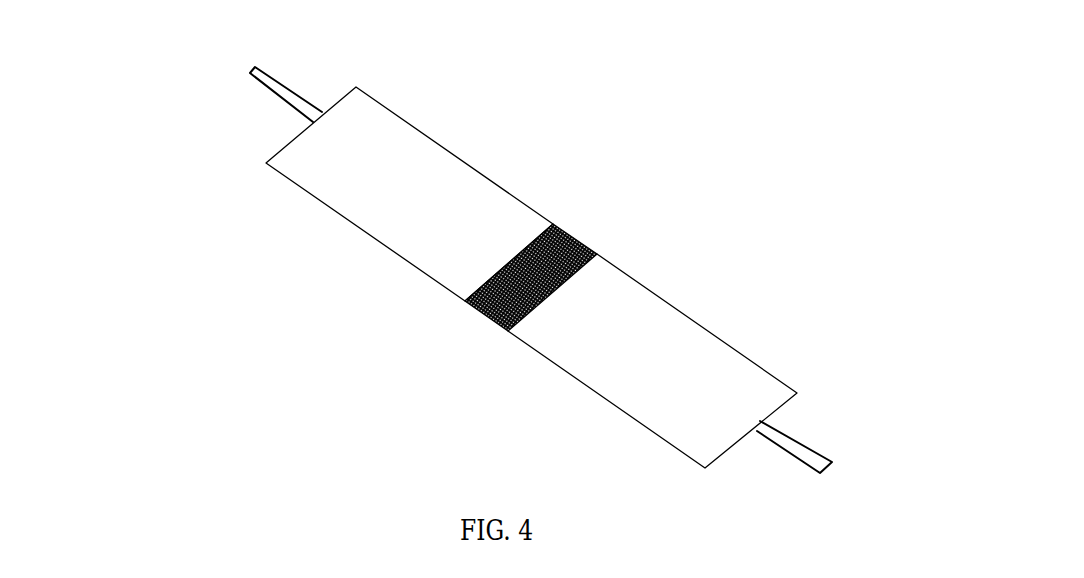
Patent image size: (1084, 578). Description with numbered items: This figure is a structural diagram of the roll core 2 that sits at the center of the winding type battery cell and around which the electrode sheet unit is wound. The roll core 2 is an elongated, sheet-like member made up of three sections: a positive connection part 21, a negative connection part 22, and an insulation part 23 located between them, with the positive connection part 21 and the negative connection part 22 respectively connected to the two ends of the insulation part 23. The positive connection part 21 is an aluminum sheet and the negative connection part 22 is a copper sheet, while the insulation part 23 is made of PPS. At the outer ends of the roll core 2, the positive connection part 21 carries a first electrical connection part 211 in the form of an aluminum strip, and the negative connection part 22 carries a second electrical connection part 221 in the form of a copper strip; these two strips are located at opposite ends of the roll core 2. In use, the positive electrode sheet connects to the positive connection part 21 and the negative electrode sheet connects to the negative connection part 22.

The roll core 2 is at (498, 250).
The positive connection part 21 is at (450, 175).
The negative connection part 22 is at (650, 327).
The insulation part 23 is at (578, 237).
The first electrical connection part 211 is at (280, 80).
The second electrical connection part 221 is at (798, 442).